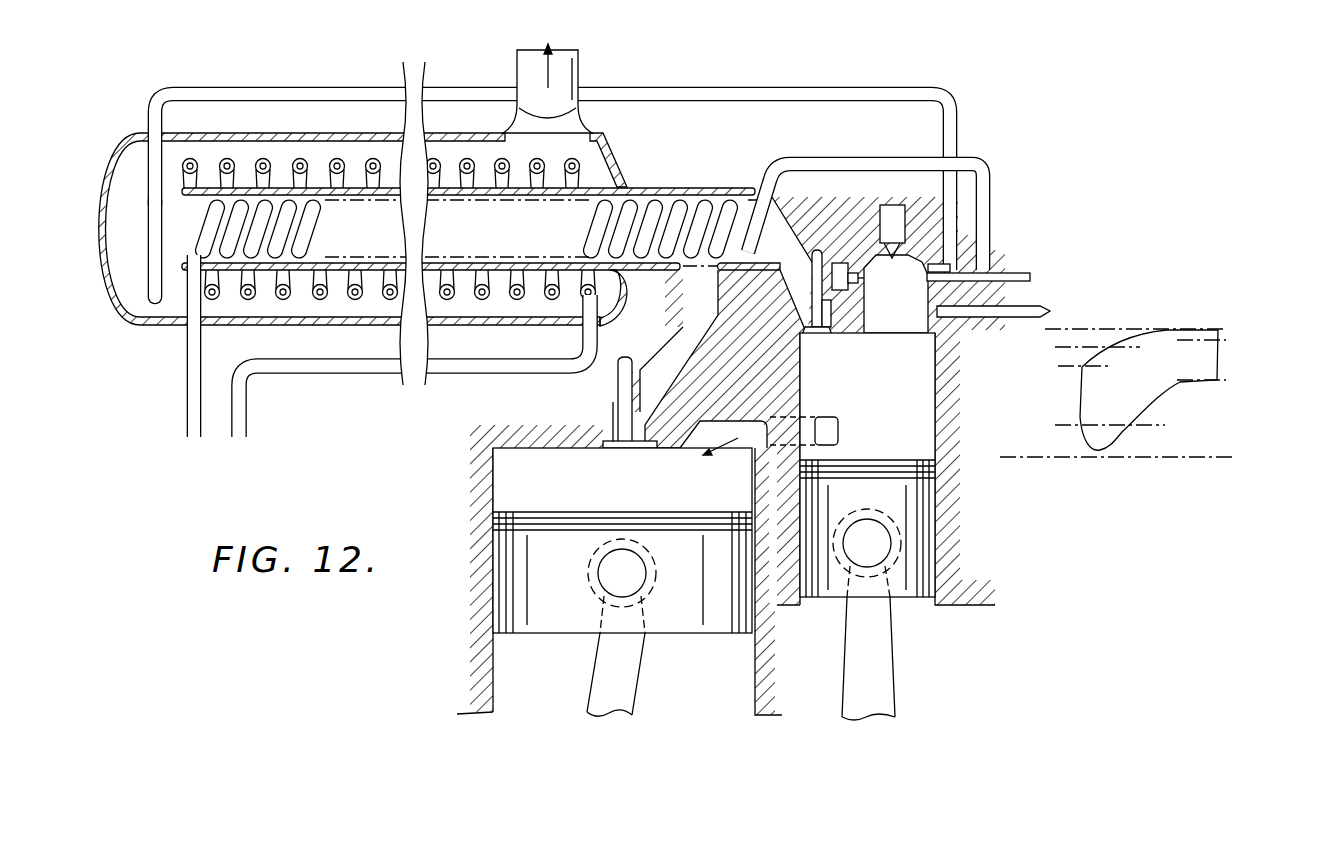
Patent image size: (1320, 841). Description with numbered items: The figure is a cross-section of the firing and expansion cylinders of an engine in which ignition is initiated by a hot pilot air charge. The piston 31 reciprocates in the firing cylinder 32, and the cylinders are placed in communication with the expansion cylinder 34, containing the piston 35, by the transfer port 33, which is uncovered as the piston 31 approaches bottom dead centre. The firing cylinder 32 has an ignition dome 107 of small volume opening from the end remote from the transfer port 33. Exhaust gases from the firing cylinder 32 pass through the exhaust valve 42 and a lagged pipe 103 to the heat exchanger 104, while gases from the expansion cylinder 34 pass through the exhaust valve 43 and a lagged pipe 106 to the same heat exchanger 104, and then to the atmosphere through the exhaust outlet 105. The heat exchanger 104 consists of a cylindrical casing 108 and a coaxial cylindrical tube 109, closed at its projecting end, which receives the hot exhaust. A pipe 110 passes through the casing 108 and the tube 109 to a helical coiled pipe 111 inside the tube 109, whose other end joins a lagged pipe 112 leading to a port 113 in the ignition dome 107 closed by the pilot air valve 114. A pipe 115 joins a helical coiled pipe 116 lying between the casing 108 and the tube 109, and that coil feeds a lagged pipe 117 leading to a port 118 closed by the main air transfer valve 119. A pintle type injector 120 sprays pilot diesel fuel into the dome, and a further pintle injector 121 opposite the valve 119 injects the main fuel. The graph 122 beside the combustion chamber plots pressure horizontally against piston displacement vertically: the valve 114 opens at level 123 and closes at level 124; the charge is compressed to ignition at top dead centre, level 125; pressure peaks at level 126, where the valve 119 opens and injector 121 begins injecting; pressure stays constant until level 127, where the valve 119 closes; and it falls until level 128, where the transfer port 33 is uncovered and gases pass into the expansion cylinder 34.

The piston 31 is at (912, 525).
The firing cylinder 32 is at (875, 393).
The transfer port 33 is at (817, 430).
The expansion cylinder 34 is at (622, 582).
The piston 35 is at (685, 575).
The exhaust valve 42 is at (810, 316).
The exhaust valve 43 is at (623, 425).
The lagged pipe 103 is at (795, 268).
The heat exchanger 104 is at (439, 272).
The exhaust outlet 105 is at (572, 78).
The lagged pipe 106 is at (690, 330).
The ignition dome 107 is at (935, 248).
The cylindrical casing 108 is at (158, 327).
The cylindrical tube 109 is at (297, 282).
The pipe 110 is at (197, 383).
The helical coiled pipe 111 is at (302, 228).
The lagged pipe 112 is at (862, 160).
The port 113 is at (964, 320).
The pilot air valve 114 is at (915, 372).
The pipe 115 is at (238, 417).
The helical coiled pipe 116 is at (485, 300).
The lagged pipe 117 is at (316, 98).
The port 118 is at (1005, 285).
The main air transfer valve 119 is at (925, 272).
The pintle type injector 120 is at (892, 207).
The pintle injector 121 is at (842, 268).
The graph 122 is at (1185, 308).
The level 123 is at (1066, 366).
The level 124 is at (1081, 344).
The level 125 is at (1151, 323).
The level 126 is at (1217, 347).
The level 127 is at (1217, 375).
The level 128 is at (1112, 423).